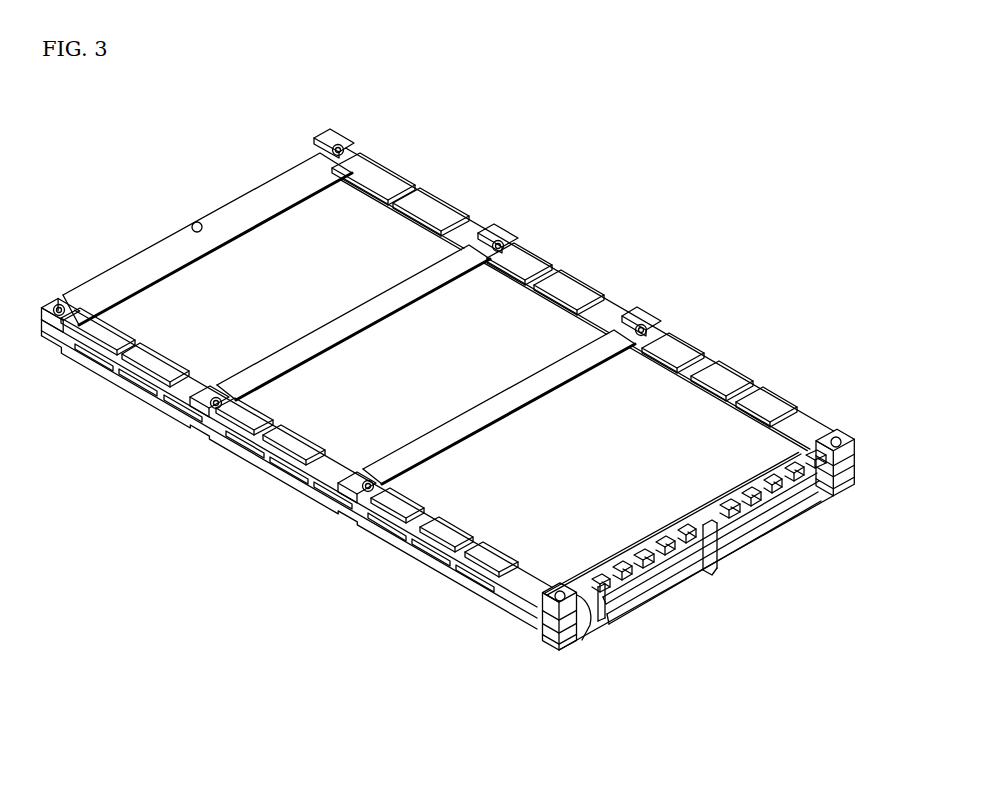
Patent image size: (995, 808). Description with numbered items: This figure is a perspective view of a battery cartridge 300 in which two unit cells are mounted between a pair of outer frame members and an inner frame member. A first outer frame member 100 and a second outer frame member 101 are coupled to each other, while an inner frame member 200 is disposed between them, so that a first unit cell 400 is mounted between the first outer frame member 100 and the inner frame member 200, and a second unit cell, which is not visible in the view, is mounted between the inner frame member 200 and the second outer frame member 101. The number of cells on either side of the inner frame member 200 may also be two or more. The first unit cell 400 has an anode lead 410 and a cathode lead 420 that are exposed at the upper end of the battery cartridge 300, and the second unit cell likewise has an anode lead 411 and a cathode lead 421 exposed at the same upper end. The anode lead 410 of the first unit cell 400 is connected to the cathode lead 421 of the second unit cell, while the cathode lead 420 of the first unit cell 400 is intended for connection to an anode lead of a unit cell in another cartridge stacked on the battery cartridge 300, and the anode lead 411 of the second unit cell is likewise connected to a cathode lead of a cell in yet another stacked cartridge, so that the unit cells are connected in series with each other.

The battery cartridge 300 is at (79, 121).
The first outer frame member 100 is at (240, 423).
The second outer frame member 101 is at (287, 477).
The inner frame member 200 is at (510, 596).
The first unit cell 400 is at (398, 252).
The anode lead 410 is at (793, 490).
The anode lead 411 is at (655, 582).
The cathode lead 420 is at (572, 642).
The cathode lead 421 is at (768, 527).